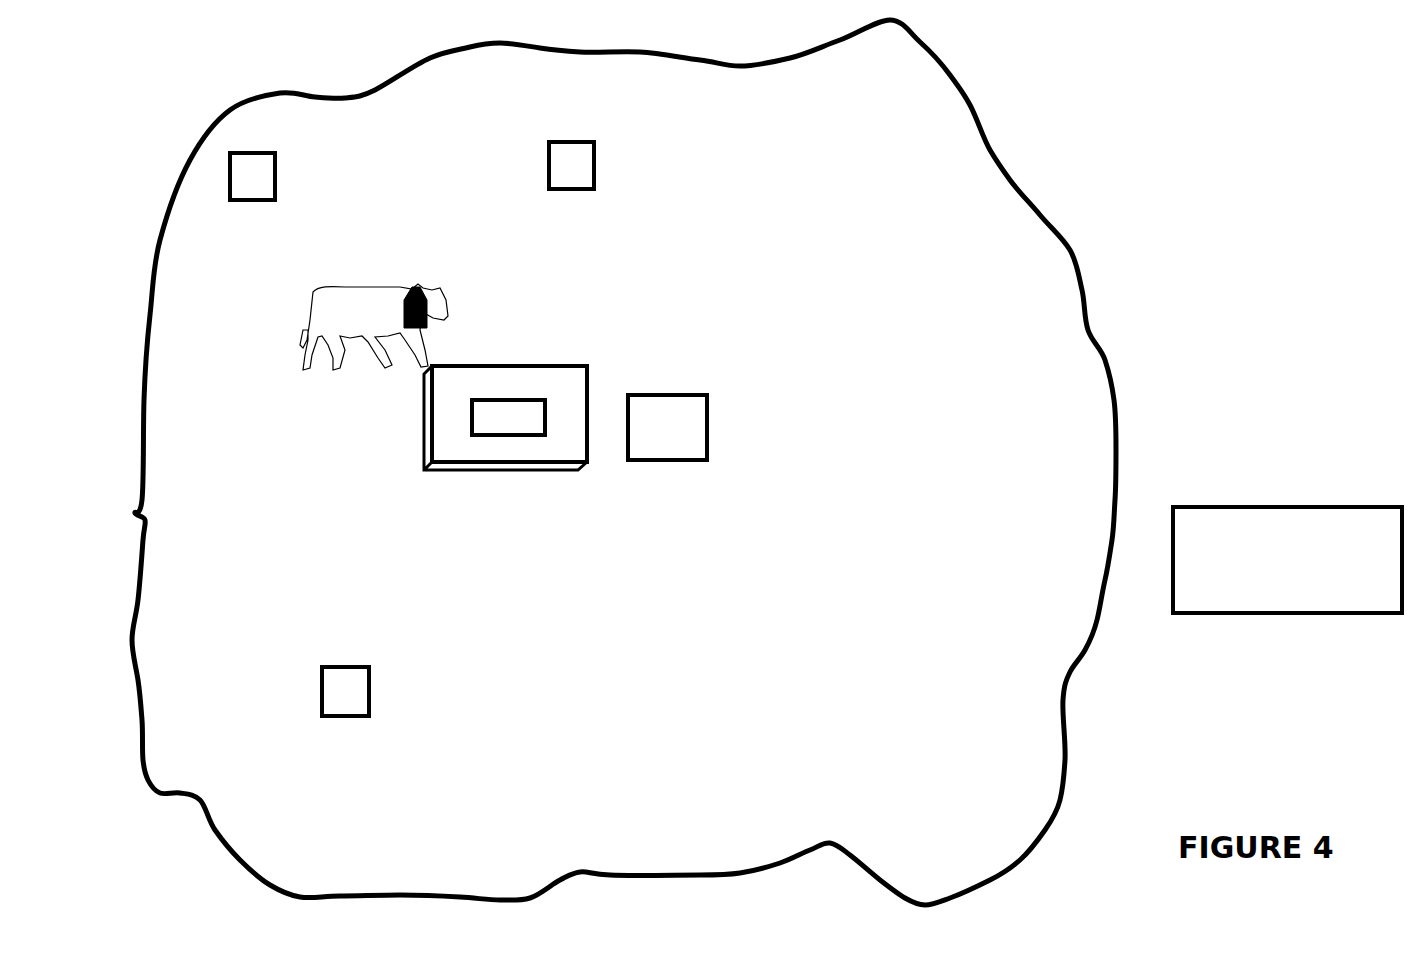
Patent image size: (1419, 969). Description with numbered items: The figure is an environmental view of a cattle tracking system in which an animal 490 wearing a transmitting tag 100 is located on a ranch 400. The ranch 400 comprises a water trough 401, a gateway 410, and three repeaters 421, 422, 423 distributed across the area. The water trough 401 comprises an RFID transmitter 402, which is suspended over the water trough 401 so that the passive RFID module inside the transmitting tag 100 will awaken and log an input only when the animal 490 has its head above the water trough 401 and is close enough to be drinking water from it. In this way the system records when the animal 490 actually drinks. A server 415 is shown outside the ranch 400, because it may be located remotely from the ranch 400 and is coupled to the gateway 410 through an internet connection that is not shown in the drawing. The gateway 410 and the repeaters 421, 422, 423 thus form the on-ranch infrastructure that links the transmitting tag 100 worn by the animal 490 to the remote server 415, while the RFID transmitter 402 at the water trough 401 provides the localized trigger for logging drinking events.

The ranch 400 is at (129, 464).
The water trough 401 is at (505, 466).
The RFID transmitter 402 is at (508, 396).
The gateway 410 is at (665, 463).
The server 415 is at (1288, 616).
The repeater 421 is at (252, 204).
The repeater 422 is at (321, 691).
The repeater 423 is at (598, 165).
The animal 490 is at (376, 276).
The transmitting tag 100 is at (416, 285).